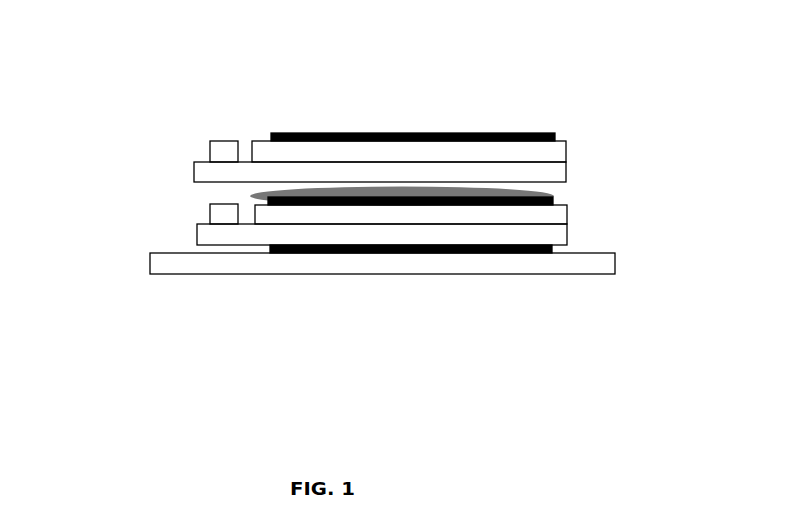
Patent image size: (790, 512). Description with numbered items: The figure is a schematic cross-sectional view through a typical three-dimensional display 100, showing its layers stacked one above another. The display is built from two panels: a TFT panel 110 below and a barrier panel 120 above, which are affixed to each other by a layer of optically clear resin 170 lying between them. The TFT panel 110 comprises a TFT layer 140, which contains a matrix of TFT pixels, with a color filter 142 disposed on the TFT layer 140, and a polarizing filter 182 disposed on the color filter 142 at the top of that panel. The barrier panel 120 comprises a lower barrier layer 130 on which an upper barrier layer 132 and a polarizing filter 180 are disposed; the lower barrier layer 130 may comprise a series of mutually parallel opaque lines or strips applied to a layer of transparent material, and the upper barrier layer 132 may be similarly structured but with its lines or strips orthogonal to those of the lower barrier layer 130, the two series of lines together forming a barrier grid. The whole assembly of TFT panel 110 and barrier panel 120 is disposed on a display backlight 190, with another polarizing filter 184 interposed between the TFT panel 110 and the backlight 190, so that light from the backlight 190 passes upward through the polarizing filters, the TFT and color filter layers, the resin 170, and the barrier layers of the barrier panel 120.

The 3D display 100 is at (154, 96).
The TFT panel 110 is at (580, 197).
The barrier panel 120 is at (580, 128).
The lower barrier layer 130 is at (387, 173).
The upper barrier layer 132 is at (343, 150).
The TFT layer 140 is at (333, 218).
The color filter 142 is at (401, 235).
The optically clear resin 170 is at (525, 191).
The polarizing filter 180 is at (449, 126).
The polarizing filter 182 is at (446, 190).
The polarizing filter 184 is at (488, 259).
The display backlight 190 is at (148, 263).